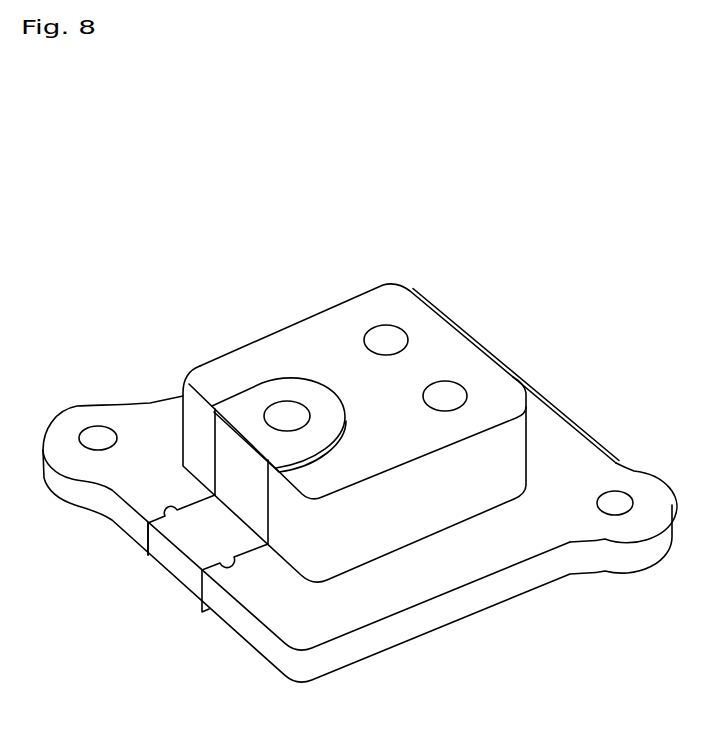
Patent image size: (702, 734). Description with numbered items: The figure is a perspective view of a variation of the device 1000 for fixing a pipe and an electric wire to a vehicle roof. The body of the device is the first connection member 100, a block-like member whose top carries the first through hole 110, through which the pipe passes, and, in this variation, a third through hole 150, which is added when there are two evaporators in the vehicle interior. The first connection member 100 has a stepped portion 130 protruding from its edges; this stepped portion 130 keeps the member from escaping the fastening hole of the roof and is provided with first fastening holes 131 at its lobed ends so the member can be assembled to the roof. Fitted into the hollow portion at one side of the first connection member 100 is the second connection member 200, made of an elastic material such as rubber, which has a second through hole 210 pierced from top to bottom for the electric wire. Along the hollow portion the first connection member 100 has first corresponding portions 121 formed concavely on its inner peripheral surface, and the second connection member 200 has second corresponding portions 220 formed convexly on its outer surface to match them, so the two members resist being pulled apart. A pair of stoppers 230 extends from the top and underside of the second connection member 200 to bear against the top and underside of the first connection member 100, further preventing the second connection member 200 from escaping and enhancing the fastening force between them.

The device for fixing a pipe and an electric wire 1000 is at (530, 208).
The first connection member 100 is at (397, 268).
The first through hole 110 is at (384, 341).
The third through hole 150 is at (445, 395).
The stepped portion 130 is at (570, 462).
The first fastening holes 131 is at (98, 432).
The second connection member 200 is at (197, 626).
The second through hole 210 is at (285, 418).
The second corresponding portions 220 is at (173, 508).
The stoppers 230 is at (233, 403).
The first corresponding portions 121 is at (232, 563).